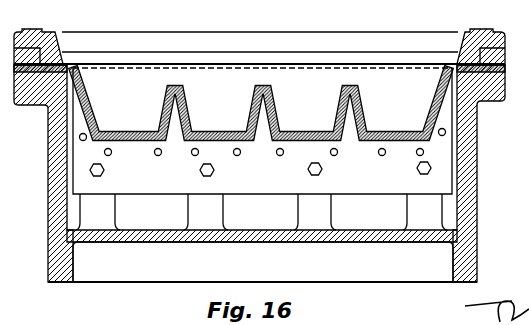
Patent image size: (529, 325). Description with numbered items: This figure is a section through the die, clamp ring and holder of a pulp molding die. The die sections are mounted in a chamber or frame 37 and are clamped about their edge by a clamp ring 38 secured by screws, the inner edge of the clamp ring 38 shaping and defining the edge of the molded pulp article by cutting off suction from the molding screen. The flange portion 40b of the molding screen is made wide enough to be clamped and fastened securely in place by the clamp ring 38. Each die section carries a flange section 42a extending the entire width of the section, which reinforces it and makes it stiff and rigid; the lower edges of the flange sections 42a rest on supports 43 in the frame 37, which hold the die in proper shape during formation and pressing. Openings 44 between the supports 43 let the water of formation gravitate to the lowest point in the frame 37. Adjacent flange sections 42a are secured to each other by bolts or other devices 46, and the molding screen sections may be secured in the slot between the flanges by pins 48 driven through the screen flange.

The frame 37 is at (478, 183).
The clamp ring 38 is at (50, 38).
The flange portion 40b is at (68, 66).
The flange section 42a is at (363, 170).
The supports 43 is at (310, 204).
The openings 44 is at (150, 215).
The bolts 46 is at (307, 169).
The pins 48 is at (192, 155).